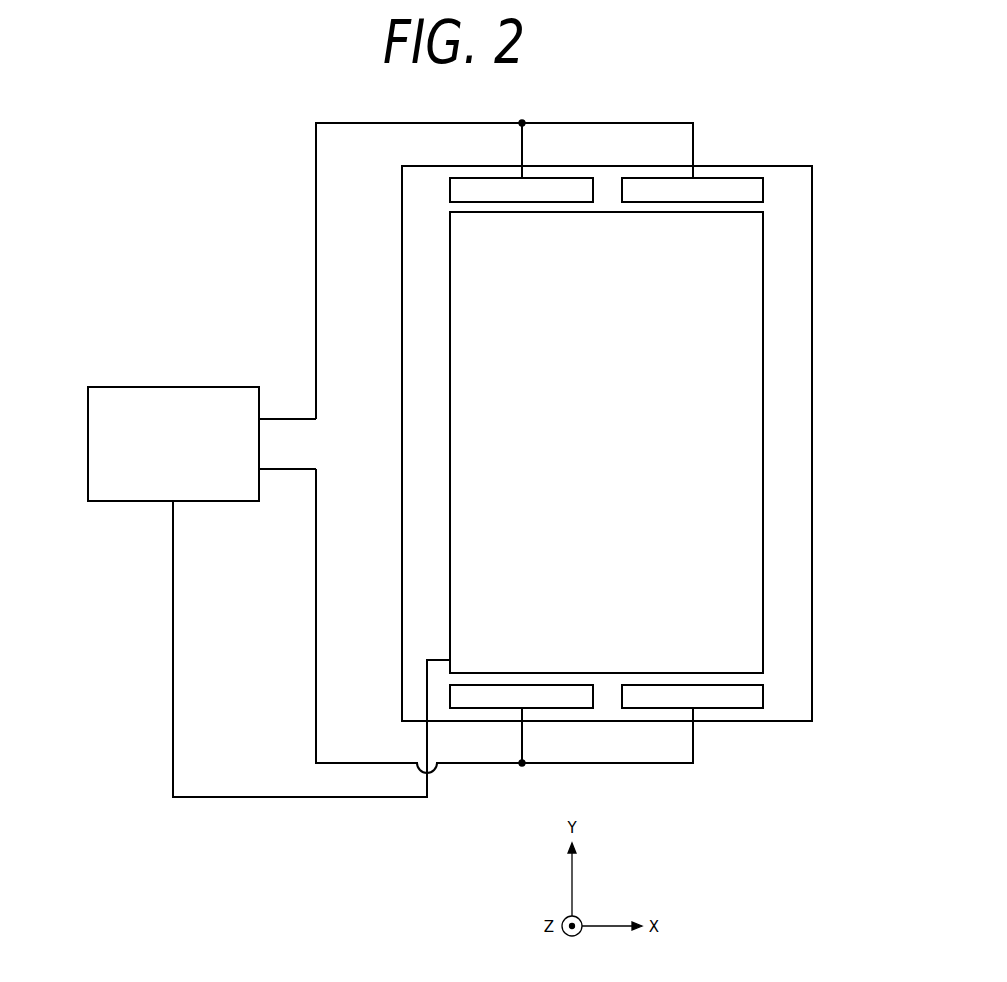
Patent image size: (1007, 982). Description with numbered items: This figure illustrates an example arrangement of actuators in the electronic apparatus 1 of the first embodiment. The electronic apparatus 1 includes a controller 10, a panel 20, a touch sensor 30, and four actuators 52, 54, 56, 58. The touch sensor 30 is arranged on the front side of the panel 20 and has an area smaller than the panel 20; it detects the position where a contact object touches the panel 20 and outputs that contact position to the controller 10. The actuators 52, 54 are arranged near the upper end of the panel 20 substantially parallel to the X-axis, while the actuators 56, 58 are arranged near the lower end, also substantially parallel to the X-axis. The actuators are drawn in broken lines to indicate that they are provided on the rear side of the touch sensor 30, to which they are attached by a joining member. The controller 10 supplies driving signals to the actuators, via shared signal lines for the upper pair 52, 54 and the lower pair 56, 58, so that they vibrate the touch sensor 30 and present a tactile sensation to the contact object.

The electronic apparatus 1 is at (756, 774).
The controller 10 is at (88, 447).
The panel 20 is at (402, 194).
The touch sensor 30 is at (763, 667).
The actuator 52 is at (520, 203).
The actuator 54 is at (690, 203).
The actuator 56 is at (520, 684).
The actuator 58 is at (690, 684).